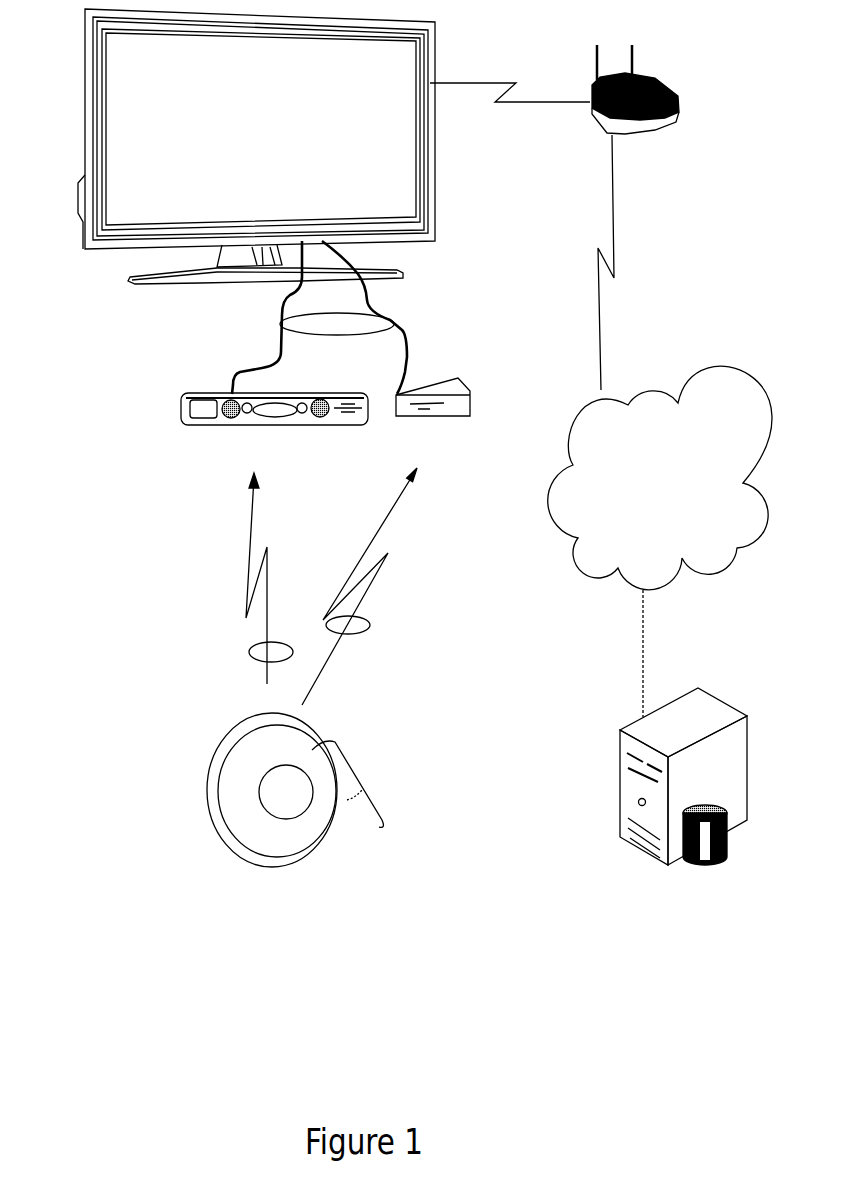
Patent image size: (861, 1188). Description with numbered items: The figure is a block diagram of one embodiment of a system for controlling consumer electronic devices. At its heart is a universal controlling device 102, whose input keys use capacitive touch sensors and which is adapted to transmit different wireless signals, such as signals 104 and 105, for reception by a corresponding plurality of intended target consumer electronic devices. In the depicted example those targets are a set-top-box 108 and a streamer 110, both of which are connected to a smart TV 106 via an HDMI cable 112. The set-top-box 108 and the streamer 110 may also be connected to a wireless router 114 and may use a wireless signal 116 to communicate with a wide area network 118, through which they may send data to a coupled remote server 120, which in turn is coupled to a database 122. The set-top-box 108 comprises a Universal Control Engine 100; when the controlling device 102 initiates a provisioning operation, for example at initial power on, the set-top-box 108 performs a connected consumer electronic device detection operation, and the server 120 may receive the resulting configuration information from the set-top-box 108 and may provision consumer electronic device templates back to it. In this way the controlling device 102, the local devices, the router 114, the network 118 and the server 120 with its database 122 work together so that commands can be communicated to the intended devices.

The Universal Control Engine 100 is at (202, 428).
The universal controlling device 102 is at (330, 860).
The wireless signal 104 is at (248, 652).
The wireless signal 105 is at (372, 623).
The smart TV 106 is at (435, 245).
The set-top-box 108 is at (350, 428).
The streamer 110 is at (442, 418).
The HDMI cable 112 is at (280, 324).
The wireless router 114 is at (648, 137).
The wireless signal 116 is at (612, 195).
The wide area network 118 is at (693, 572).
The remote server 120 is at (668, 700).
The database 122 is at (722, 864).